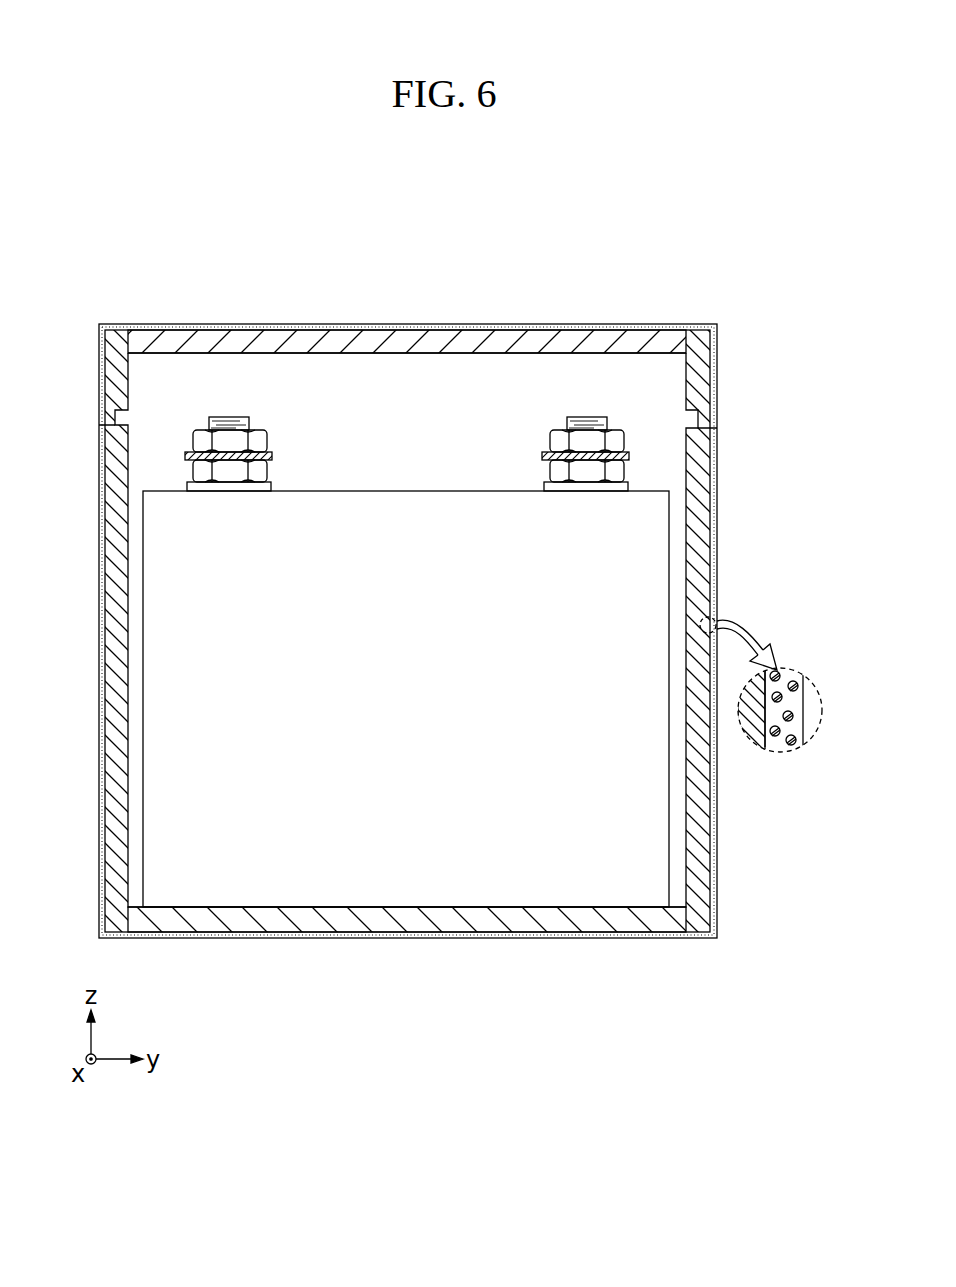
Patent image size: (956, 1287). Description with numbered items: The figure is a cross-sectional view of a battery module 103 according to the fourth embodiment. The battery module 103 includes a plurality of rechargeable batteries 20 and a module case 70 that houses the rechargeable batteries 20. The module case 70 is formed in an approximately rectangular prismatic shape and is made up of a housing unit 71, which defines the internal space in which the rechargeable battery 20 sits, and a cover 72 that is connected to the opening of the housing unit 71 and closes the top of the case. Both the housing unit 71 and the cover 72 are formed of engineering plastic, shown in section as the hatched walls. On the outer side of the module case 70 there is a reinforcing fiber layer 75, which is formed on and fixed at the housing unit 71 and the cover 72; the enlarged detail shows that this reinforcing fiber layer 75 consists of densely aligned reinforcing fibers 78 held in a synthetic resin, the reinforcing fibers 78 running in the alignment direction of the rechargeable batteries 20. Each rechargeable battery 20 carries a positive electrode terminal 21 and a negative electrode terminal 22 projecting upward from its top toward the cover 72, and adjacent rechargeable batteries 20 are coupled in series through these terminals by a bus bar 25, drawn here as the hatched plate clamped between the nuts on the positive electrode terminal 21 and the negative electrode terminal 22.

The battery module 103 is at (397, 217).
The module case 70 is at (652, 300).
The housing unit 71 is at (695, 523).
The cover 72 is at (373, 343).
The reinforcing fiber layer 75 is at (713, 560).
The reinforcing fibers 78 is at (796, 745).
The rechargeable battery 20 is at (144, 746).
The positive electrode terminal 21 is at (230, 417).
The negative electrode terminal 22 is at (593, 416).
The bus bar 25 is at (630, 456).